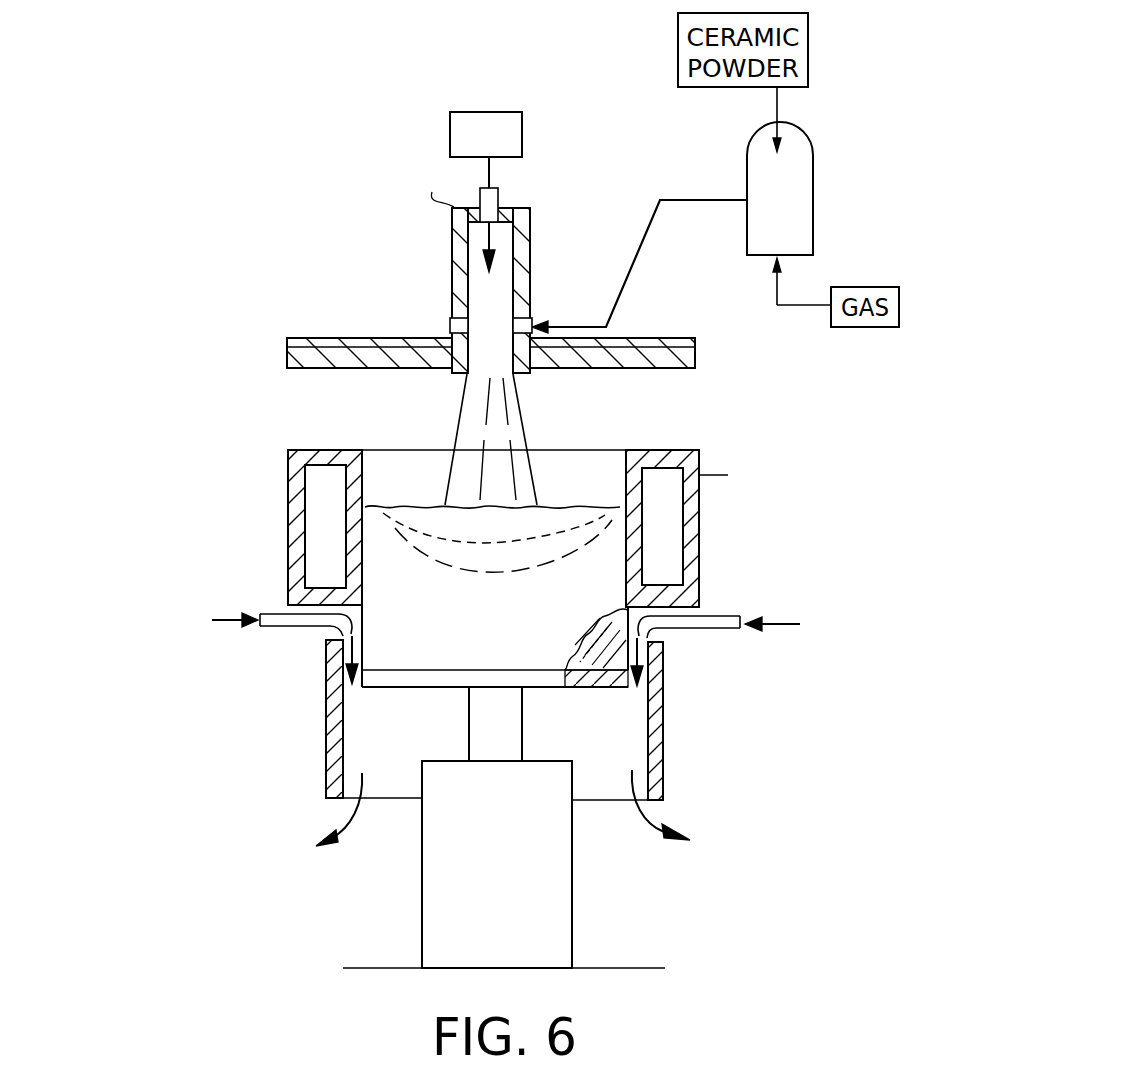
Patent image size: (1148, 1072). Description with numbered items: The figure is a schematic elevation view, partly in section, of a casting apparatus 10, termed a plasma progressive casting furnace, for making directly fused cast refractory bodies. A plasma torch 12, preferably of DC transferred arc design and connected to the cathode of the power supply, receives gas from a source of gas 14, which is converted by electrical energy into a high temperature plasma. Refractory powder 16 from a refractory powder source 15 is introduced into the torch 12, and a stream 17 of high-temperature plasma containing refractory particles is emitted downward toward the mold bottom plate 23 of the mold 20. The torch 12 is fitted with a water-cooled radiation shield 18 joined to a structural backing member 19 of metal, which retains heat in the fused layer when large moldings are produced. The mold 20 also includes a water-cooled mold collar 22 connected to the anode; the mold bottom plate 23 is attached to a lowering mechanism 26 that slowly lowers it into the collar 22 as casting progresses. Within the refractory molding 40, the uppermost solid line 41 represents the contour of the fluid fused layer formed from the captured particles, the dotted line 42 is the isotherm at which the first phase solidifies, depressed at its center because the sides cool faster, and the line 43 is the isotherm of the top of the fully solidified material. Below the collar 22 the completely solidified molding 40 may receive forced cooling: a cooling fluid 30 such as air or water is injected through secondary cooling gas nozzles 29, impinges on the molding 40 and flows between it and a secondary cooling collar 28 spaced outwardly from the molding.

The casting apparatus 10 is at (265, 358).
The plasma torch 12 is at (452, 276).
The source of gas 14 is at (510, 112).
The refractory powder source 15 is at (813, 210).
The refractory powder 16 is at (688, 200).
The stream of high-temperature plasma 17 is at (524, 410).
The water-cooled radiation shield 18 is at (697, 357).
The structural backing member 19 is at (683, 306).
The mold 20 is at (185, 438).
The water-cooled mold collar 22 is at (288, 545).
The mold bottom plate 23 is at (590, 690).
The lowering mechanism 26 is at (422, 857).
The secondary cooling collar 28 is at (665, 706).
The secondary cooling gas nozzles 29 is at (721, 616).
The cooling fluid 30 is at (780, 622).
The refractory molding 40 is at (496, 637).
The uppermost solid line 41 is at (541, 506).
The dotted line 42 is at (591, 507).
The line 43 is at (525, 568).